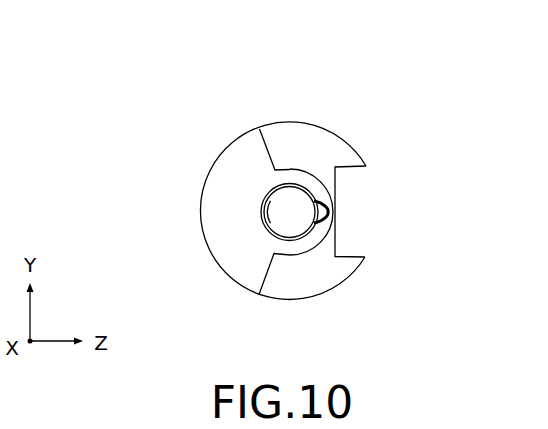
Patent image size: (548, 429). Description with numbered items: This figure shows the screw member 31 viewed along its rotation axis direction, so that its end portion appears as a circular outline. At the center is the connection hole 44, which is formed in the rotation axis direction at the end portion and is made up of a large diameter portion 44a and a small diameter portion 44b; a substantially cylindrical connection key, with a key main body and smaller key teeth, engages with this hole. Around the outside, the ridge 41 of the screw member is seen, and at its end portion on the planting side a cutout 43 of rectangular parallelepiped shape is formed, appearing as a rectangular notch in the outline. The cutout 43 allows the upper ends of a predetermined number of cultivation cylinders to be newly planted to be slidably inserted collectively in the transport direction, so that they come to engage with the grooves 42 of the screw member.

The rotary member 31 is at (320, 90).
The ridge 41 is at (287, 123).
The groove 42 is at (316, 172).
The cutout 43 is at (353, 252).
The connection hole 44 is at (254, 199).
The large diameter portion 44a is at (266, 229).
The small diameter portion 44b is at (314, 214).